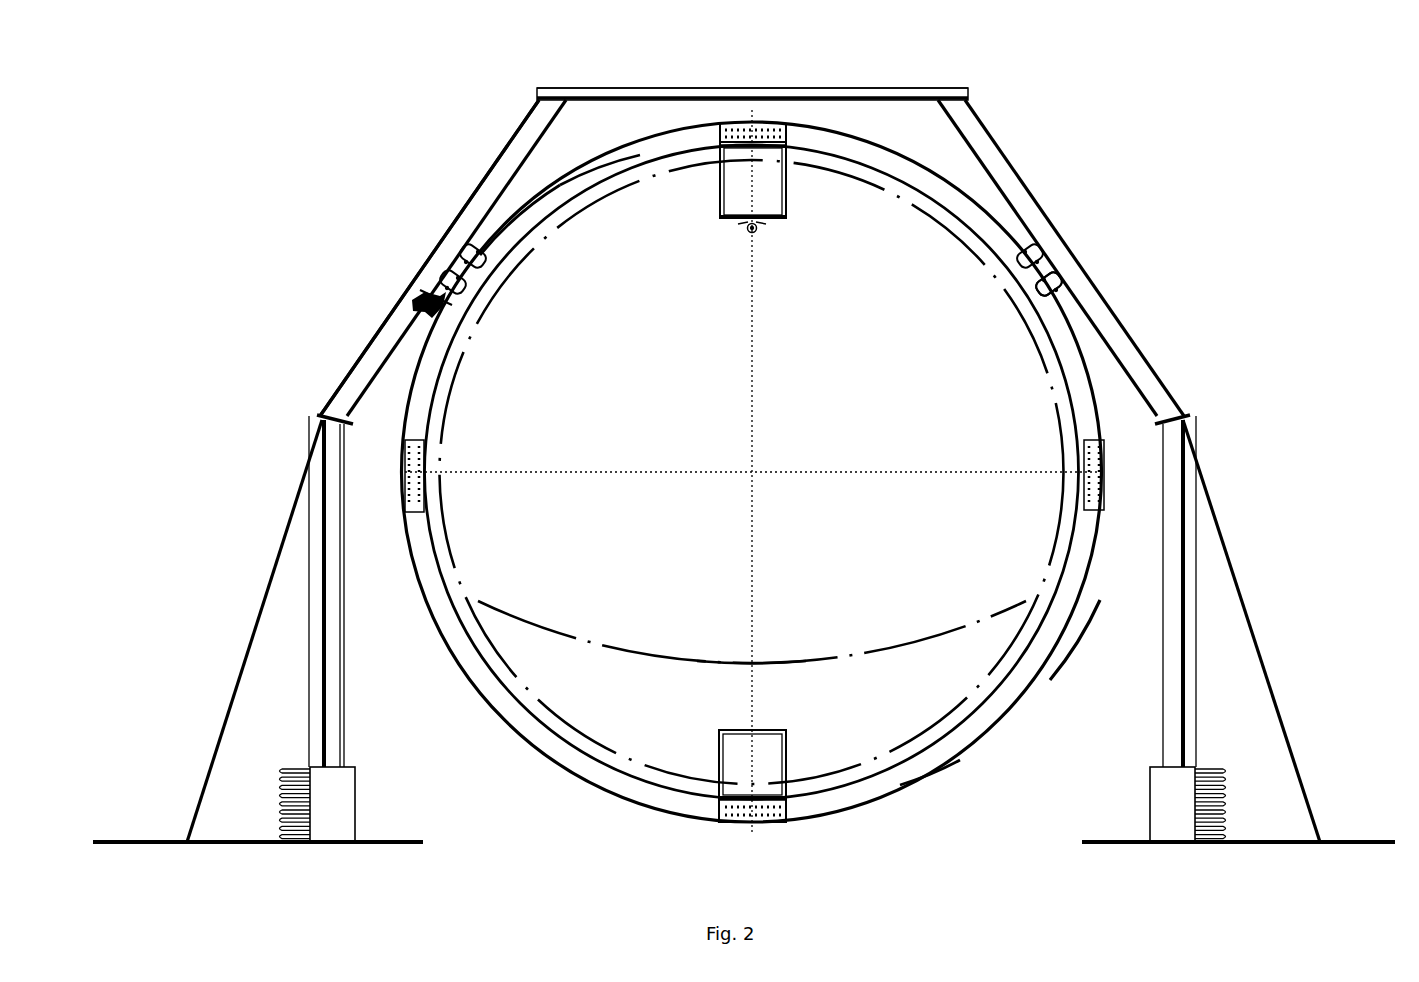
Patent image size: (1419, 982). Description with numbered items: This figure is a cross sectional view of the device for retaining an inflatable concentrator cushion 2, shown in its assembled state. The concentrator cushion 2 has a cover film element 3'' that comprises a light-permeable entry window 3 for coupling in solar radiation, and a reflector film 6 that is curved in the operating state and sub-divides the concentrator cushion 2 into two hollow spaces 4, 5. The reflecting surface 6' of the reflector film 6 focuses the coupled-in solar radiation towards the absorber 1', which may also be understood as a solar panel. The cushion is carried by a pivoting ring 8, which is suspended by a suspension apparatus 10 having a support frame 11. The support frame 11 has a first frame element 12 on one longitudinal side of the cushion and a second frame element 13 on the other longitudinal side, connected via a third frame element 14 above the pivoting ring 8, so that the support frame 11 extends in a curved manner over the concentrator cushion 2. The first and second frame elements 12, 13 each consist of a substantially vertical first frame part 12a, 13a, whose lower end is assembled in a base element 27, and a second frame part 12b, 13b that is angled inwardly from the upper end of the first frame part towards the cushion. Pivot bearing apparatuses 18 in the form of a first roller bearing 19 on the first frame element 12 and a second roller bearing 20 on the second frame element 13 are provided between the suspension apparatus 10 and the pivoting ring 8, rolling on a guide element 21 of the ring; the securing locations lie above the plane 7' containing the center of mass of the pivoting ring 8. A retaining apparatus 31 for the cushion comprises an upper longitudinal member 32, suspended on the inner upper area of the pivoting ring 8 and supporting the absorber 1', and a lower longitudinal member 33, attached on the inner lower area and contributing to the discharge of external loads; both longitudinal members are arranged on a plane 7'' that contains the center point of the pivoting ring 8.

The absorber 1' is at (621, 138).
The concentrator cushion 2 is at (455, 402).
The light-permeable entry window 3 is at (557, 220).
The cover film element 3'' is at (752, 472).
The hollow space 4 is at (920, 268).
The hollow space 5 is at (936, 697).
The reflector film 6 is at (752, 621).
The reflecting surface 6' is at (737, 635).
The plane 7' is at (752, 451).
The plane 7'' is at (794, 472).
The pivoting ring 8 is at (1082, 606).
The suspension apparatus 10 is at (500, 135).
The support frame 11 is at (682, 72).
The first frame element 12 is at (322, 518).
The first frame part 12a is at (323, 697).
The second frame part 12b is at (343, 383).
The second frame element 13 is at (1186, 540).
The first frame part 13a is at (1188, 720).
The second frame part 13b is at (1139, 347).
The third frame element 14 is at (790, 95).
The pivot bearing apparatus 18 is at (468, 243).
The first roller bearing 19 is at (455, 305).
The second roller bearing 20 is at (1053, 275).
The guide element 21 is at (577, 166).
The base element 27 is at (345, 826).
The retaining apparatus 31 is at (790, 168).
The upper longitudinal member 32 is at (793, 192).
The lower longitudinal member 33 is at (789, 750).